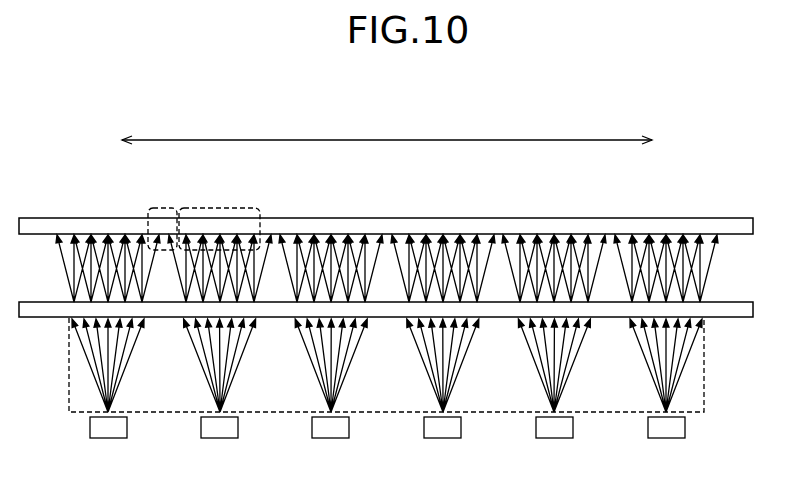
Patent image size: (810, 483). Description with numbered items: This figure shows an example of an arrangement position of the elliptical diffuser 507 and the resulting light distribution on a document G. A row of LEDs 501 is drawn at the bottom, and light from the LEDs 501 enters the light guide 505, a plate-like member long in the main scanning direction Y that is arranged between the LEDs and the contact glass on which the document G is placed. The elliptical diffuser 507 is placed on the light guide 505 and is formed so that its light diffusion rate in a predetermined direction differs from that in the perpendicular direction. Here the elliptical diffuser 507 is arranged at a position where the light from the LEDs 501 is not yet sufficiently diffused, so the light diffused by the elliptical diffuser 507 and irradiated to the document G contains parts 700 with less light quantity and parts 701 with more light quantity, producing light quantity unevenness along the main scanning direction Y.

The document G is at (739, 218).
The main scanning direction Y is at (387, 126).
The elliptical diffuser 507 is at (746, 317).
The light guide 505 is at (704, 373).
The LEDs 501 is at (685, 426).
The parts with less light quantity 700 is at (165, 208).
The parts with more light quantity 701 is at (229, 208).